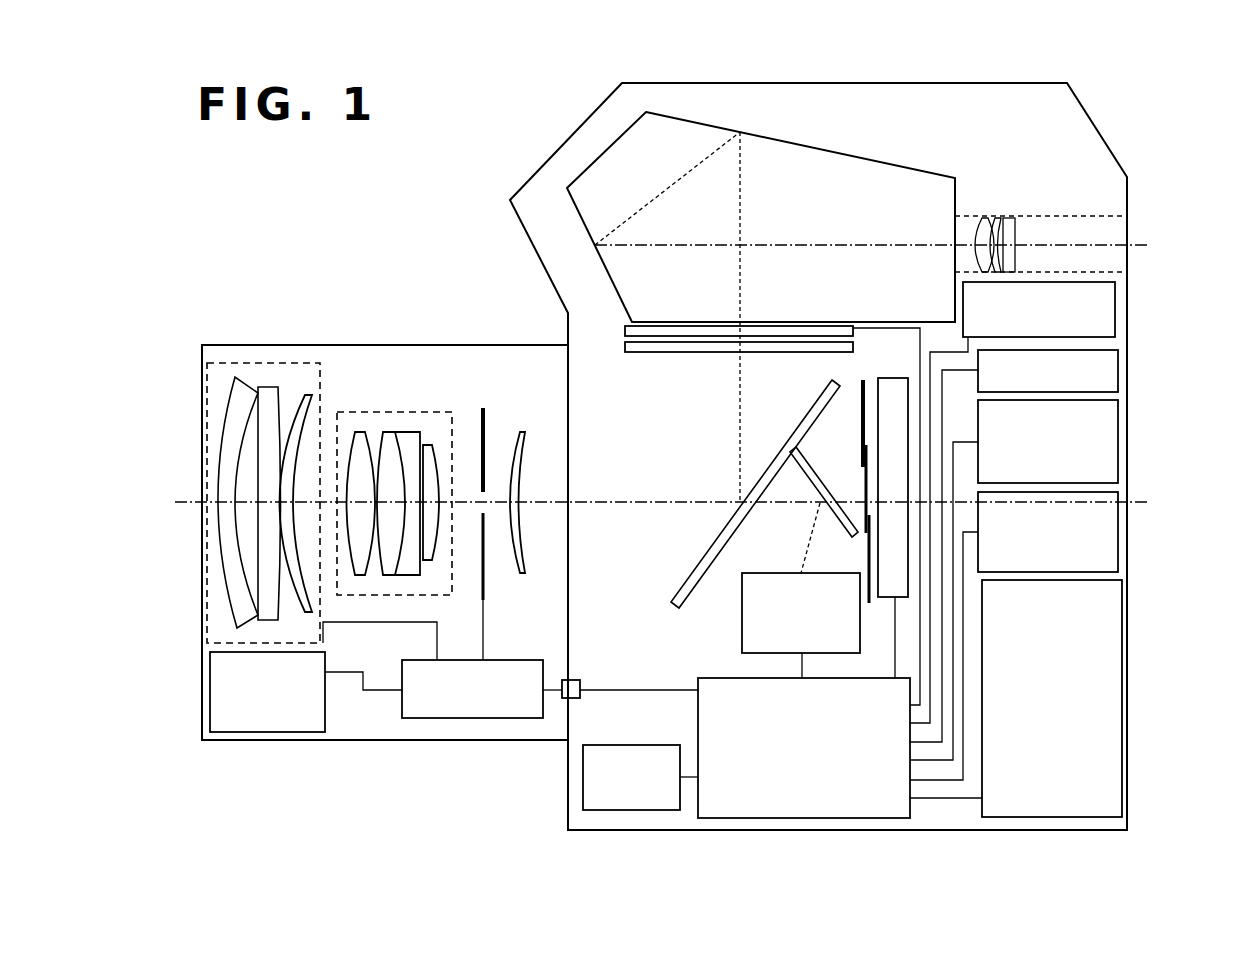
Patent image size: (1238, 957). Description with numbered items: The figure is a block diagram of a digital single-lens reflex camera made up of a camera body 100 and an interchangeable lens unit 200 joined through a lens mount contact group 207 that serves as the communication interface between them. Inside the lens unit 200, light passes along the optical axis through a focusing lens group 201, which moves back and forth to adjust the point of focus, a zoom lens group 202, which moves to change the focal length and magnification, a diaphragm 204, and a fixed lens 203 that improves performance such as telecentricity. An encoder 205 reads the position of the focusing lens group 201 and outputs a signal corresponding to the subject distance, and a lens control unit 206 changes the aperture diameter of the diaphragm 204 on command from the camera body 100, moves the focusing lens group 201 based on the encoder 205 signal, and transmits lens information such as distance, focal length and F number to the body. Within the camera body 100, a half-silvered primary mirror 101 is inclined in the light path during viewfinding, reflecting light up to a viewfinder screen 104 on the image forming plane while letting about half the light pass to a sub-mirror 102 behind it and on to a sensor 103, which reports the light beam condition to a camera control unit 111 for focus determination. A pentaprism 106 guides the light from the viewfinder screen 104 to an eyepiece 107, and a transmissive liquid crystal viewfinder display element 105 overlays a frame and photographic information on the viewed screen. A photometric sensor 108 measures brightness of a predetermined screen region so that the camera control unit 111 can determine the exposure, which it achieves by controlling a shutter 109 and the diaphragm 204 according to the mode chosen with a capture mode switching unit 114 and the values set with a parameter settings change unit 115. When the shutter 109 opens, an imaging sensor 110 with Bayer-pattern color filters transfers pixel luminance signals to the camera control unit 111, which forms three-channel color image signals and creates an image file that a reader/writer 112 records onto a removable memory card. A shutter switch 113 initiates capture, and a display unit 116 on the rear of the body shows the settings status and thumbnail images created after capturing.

The camera body 100 is at (565, 141).
The primary mirror 101 is at (672, 601).
The sub-mirror 102 is at (822, 477).
The sensor 103 is at (768, 573).
The viewfinder screen 104 is at (648, 353).
The viewfinder display element 105 is at (626, 330).
The pentaprism 106 is at (852, 155).
The eyepiece 107 is at (1058, 215).
The photometric sensor 108 is at (1116, 305).
The shutter 109 is at (861, 388).
The imaging sensor 110 is at (893, 378).
The camera control unit 111 is at (710, 678).
The reader/writer 112 is at (630, 745).
The shutter switch 113 is at (1118, 370).
The capture mode switching unit 114 is at (1118, 444).
The parameter settings change unit 115 is at (1118, 530).
The display unit 116 is at (1122, 690).
The lens unit 200 is at (215, 345).
The focusing lens group 201 is at (282, 363).
The zoom lens group 202 is at (395, 412).
The fixed lens 203 is at (518, 432).
The diaphragm 204 is at (483, 408).
The encoder 205 is at (326, 700).
The lens control unit 206 is at (517, 660).
The lens mount contact group 207 is at (580, 683).